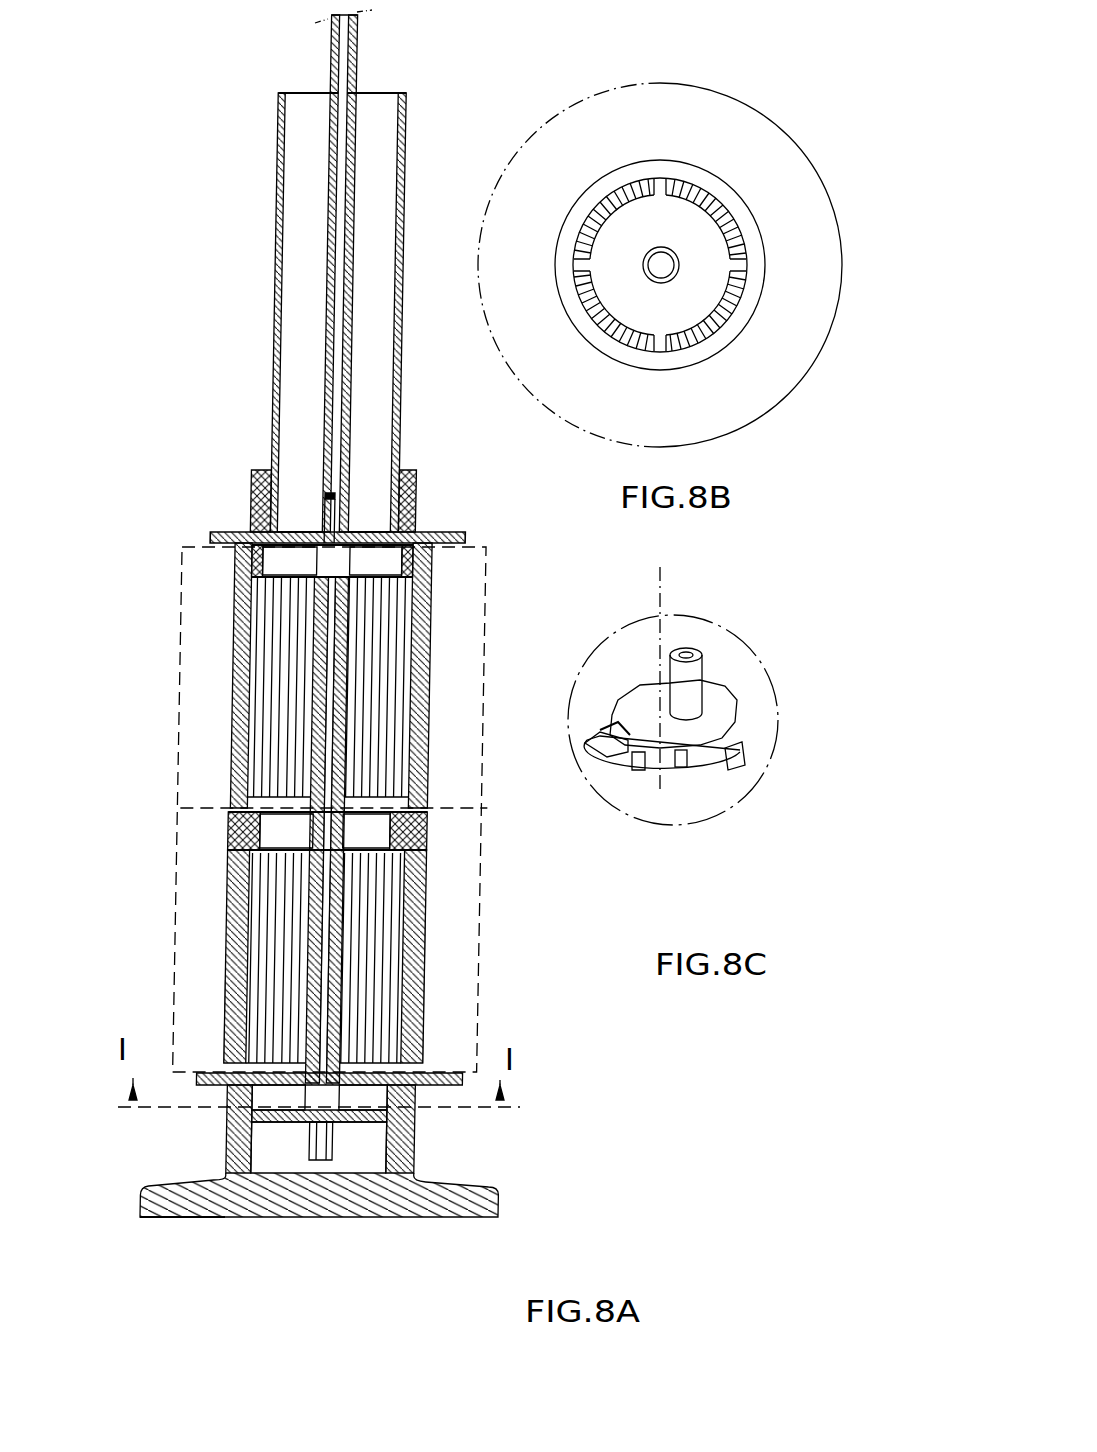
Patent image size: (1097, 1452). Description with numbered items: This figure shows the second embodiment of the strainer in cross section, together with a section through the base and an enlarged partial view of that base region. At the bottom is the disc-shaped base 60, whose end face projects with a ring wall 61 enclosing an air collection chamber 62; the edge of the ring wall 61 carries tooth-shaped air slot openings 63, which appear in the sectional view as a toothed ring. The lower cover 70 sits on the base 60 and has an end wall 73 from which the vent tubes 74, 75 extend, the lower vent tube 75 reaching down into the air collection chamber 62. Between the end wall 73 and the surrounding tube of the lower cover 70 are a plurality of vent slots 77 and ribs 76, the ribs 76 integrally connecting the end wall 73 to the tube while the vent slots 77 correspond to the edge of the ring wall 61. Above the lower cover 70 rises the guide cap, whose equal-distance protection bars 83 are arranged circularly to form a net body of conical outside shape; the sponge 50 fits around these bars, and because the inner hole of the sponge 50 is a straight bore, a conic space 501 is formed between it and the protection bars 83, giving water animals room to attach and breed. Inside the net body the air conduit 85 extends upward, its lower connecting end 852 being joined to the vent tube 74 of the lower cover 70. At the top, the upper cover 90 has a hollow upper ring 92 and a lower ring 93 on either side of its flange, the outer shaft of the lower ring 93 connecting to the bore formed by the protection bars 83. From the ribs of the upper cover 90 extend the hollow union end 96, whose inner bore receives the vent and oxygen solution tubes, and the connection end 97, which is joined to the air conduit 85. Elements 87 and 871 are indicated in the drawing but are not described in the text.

In FIG. 8A, the base 60 is at (340, 58).
In FIG. 8A, the lower cover 70 is at (390, 147).
In FIG. 8A, the upper ring 92 is at (413, 488).
In FIG. 8A, the union end 96 is at (347, 500).
In FIG. 8A, the upper cover 90 is at (422, 523).
In FIG. 8A, the lower ring 93 is at (428, 553).
In FIG. 8A, the connection end 97 is at (313, 558).
In FIG. 8A, the sponge 50 is at (455, 620).
In FIG. 8A, the protection bars 83 is at (258, 884).
In FIG. 8A, the lower cylinder wall 871 is at (425, 1047).
In FIG. 8A, the air conduit 85 is at (300, 958).
In FIG. 8A, the lower housing section 87 is at (455, 973).
In FIG. 8A, the conic space 501 is at (227, 1037).
In FIG. 8A, the connecting end 852 is at (240, 1087).
In FIG. 8A, the vent tube 74 is at (417, 1092).
In FIG. 8B, the vent tube 74 is at (683, 260).
In FIG. 8C, the vent tube 74 is at (695, 693).
In FIG. 8A, the ring wall 61 is at (240, 1167).
In FIG. 8C, the ring wall 61 is at (688, 770).
In FIG. 8A, the air collection chamber 62 is at (363, 1165).
In FIG. 8A, the vent tube 75 is at (305, 1150).
In FIG. 8A, the end wall 73 is at (203, 1220).
In FIG. 8C, the end wall 73 is at (720, 713).
In FIG. 8B, the air slot openings 63 is at (672, 213).
In FIG. 8C, the air slot openings 63 is at (582, 767).
In FIG. 8B, the ribs 76 is at (743, 268).
In FIG. 8C, the ribs 76 is at (620, 717).
In FIG. 8C, the vent slots 77 is at (665, 661).